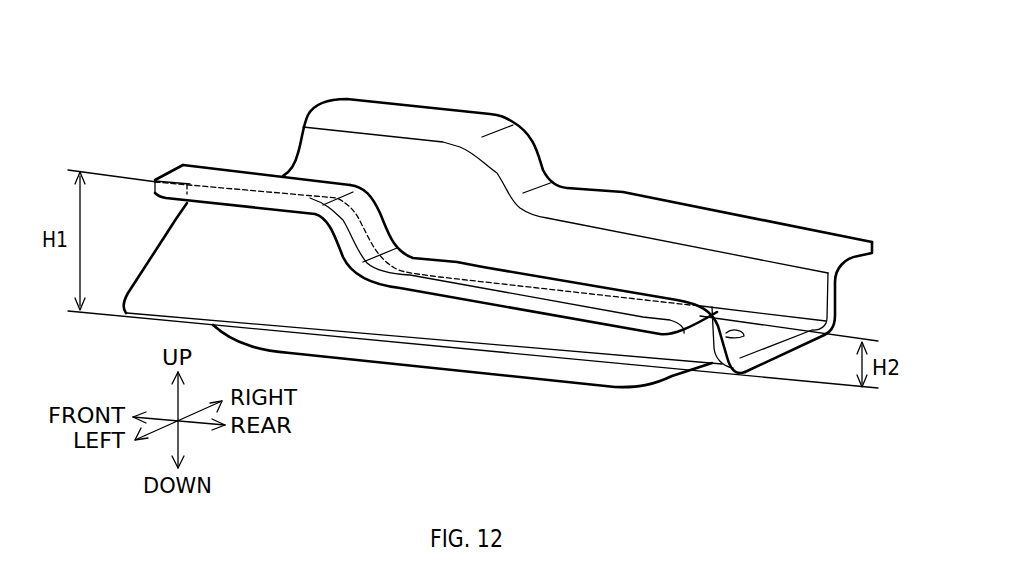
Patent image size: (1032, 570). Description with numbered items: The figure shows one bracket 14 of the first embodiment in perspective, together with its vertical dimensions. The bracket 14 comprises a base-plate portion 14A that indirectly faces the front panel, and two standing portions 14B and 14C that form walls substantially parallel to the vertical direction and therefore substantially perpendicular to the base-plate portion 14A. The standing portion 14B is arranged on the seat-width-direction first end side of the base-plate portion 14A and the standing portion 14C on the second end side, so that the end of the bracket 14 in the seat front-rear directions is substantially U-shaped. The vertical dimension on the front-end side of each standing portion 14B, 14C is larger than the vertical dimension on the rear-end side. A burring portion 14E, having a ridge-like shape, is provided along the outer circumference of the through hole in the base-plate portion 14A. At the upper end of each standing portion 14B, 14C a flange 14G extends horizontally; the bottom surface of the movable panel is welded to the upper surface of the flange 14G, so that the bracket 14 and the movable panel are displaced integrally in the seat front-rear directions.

The bracket 14 is at (545, 91).
The base-plate portion 14A is at (800, 320).
The standing portion 14B is at (467, 188).
The standing portion 14C is at (178, 238).
The burring portion 14E is at (442, 357).
The flange 14G is at (213, 178).